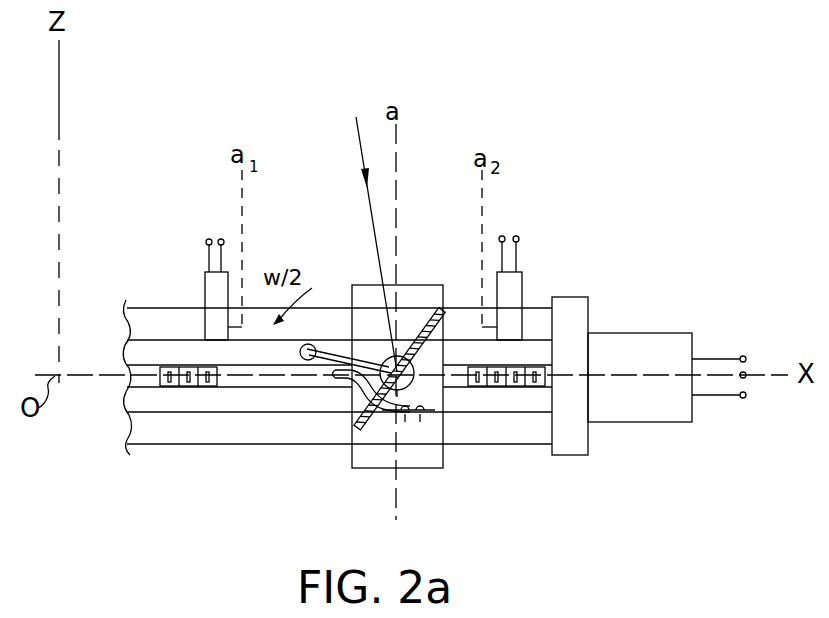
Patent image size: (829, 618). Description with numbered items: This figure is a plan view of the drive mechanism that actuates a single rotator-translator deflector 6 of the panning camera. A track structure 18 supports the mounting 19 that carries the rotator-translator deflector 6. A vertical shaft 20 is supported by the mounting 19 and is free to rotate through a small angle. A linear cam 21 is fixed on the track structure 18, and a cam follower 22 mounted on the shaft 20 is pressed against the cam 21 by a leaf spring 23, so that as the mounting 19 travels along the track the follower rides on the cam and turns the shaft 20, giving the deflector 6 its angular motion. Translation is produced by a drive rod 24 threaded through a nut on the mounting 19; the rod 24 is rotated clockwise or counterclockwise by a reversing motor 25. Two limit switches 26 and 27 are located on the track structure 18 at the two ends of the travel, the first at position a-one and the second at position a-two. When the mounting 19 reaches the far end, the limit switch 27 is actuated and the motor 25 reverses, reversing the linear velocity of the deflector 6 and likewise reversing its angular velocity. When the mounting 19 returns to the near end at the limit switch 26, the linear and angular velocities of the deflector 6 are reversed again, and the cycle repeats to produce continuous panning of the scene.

The rotator-translator deflector 6 is at (372, 430).
The track structure 18 is at (150, 434).
The mounting 19 is at (420, 470).
The vertical shaft 20 is at (412, 390).
The linear cam 21 is at (310, 343).
The cam follower 22 is at (330, 370).
The leaf spring 23 is at (365, 394).
The drive rod 24 is at (495, 388).
The reversing motor 25 is at (678, 343).
The limit switch 26 is at (205, 292).
The limit switch 27 is at (525, 283).